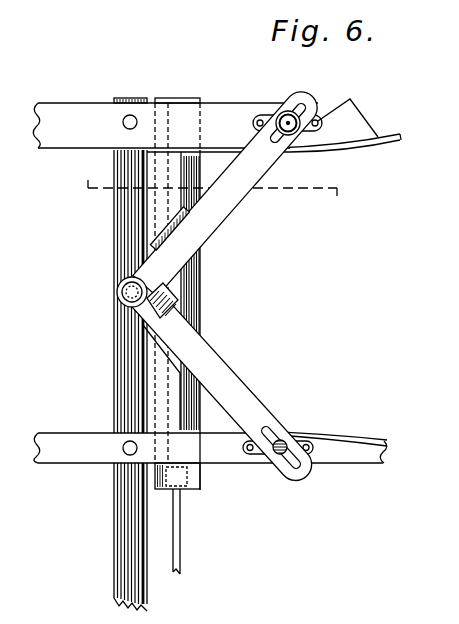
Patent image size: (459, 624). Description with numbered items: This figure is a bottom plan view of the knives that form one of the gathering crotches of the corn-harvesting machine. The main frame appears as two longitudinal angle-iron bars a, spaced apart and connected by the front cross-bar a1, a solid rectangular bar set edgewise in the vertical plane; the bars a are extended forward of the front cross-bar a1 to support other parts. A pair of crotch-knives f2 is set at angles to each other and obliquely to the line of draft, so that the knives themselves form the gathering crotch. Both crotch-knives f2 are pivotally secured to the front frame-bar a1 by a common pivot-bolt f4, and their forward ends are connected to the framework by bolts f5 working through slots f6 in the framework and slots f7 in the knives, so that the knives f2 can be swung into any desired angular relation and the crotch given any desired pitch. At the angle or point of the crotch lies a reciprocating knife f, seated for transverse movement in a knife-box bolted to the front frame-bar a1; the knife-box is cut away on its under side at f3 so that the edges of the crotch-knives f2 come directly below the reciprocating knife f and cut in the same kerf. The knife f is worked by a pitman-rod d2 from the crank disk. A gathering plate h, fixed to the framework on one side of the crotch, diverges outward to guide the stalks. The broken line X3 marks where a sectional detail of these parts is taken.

The longitudinal angle-iron bar a is at (70, 133).
The front cross-bar a1 is at (123, 243).
The reciprocating knife f is at (194, 303).
The crotch-knife f2 is at (224, 217).
The cut-away of knife-box f3 is at (170, 363).
The common pivot-bolt f4 is at (117, 295).
The bolt f5 is at (288, 112).
The slot in the frame-work f6 is at (317, 121).
The slot in the knife f7 is at (302, 107).
The gathering plate h is at (396, 139).
The pitman-rod d2 is at (179, 557).
The section line X3 is at (215, 196).